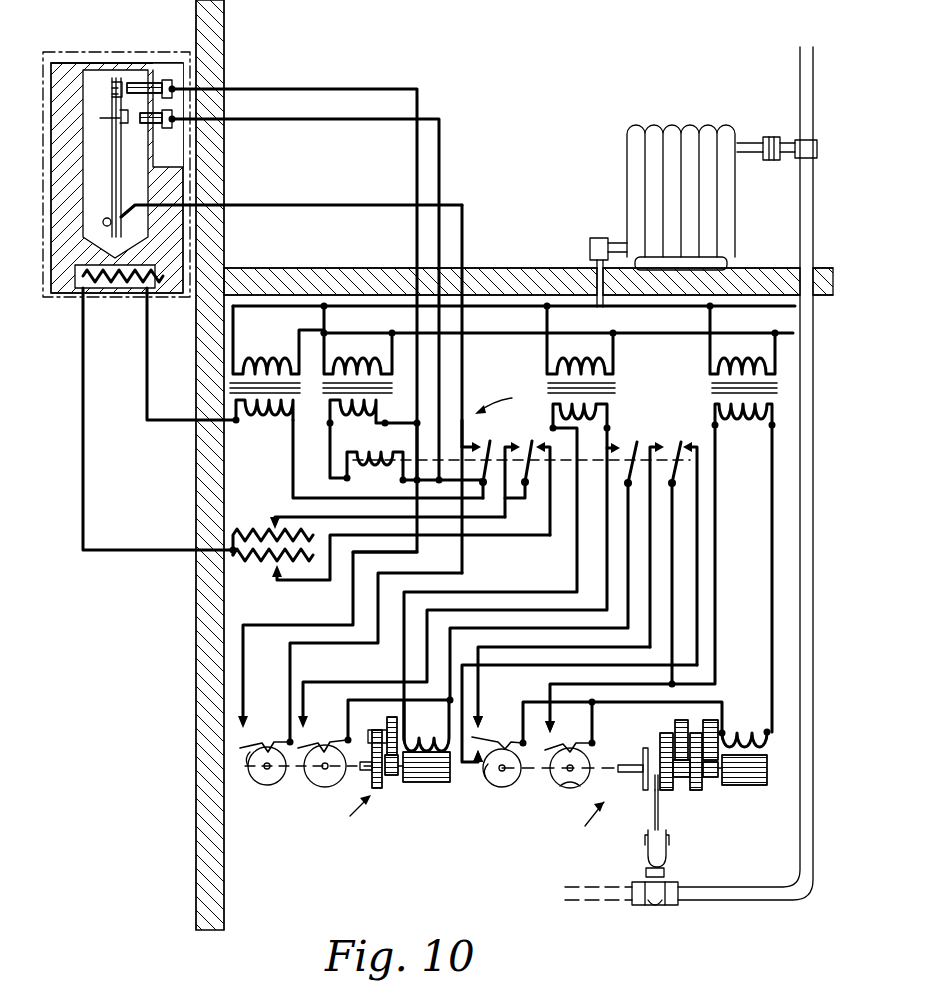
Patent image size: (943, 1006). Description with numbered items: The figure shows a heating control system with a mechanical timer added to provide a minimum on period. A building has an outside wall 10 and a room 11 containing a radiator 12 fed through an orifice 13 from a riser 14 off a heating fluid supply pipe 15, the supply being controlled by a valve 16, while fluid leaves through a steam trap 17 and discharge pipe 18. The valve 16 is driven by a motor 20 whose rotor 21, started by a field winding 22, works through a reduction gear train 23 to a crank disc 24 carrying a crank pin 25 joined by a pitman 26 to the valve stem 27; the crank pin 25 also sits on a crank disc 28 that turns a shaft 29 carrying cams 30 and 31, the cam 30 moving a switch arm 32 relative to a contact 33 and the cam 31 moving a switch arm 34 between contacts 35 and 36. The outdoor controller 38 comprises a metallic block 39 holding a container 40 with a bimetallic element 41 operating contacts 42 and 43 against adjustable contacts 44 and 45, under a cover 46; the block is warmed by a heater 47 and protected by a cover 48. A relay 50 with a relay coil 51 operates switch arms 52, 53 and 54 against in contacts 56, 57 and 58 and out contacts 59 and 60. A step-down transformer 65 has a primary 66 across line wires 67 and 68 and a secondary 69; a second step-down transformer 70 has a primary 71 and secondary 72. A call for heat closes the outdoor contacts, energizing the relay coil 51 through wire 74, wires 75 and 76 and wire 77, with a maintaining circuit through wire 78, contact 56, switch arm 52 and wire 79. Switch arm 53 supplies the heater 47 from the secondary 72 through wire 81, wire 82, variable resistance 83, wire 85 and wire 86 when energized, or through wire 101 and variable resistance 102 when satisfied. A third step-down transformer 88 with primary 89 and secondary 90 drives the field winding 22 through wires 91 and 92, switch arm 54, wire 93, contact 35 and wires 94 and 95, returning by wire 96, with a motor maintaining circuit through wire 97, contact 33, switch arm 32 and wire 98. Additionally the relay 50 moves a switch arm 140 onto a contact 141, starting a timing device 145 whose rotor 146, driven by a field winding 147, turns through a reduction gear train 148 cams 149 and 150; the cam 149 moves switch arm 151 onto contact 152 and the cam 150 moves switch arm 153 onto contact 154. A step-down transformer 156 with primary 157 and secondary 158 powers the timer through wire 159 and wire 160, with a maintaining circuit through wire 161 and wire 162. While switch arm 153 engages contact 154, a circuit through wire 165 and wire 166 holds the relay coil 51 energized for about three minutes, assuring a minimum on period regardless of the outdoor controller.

The outside wall 10 is at (196, 612).
The room 11 is at (563, 110).
The radiator 12 is at (627, 158).
The orifice 13 is at (770, 137).
The riser 14 is at (800, 200).
The heating fluid supply pipe 15 is at (612, 887).
The valve 16 is at (655, 905).
The steam trap 17 is at (598, 238).
The discharge pipe 18 is at (597, 262).
The motor 20 is at (582, 815).
The rotor 21 is at (748, 785).
The field winding 22 is at (740, 733).
The reduction gear train 23 is at (700, 790).
The crank disc 24 is at (666, 790).
The crank pin 25 is at (655, 795).
The pitman 26 is at (655, 822).
The valve stem 27 is at (666, 862).
The crank disc 28 is at (645, 752).
The shaft 29 is at (630, 774).
The cam 30 is at (556, 780).
The cam 31 is at (502, 787).
The switch arm 32 is at (564, 748).
The contact 33 is at (556, 730).
The switch arm 34 is at (492, 740).
The contact 35 is at (482, 726).
The contact 36 is at (478, 766).
The outdoor controller 38 is at (66, 300).
The metallic block 39 is at (160, 290).
The container 40 is at (96, 218).
The bimetallic element 41 is at (112, 160).
The contact 42 is at (112, 84).
The contact 43 is at (107, 115).
The contact 44 is at (149, 93).
The contact 45 is at (146, 130).
The cover 46 is at (112, 65).
The heater 47 is at (110, 288).
The cover 48 is at (60, 52).
The relay 50 is at (499, 402).
The relay coil 51 is at (380, 470).
The switch arm 52 is at (488, 470).
The switch arm 53 is at (525, 486).
The switch arm 54 is at (675, 442).
The contact 56 is at (478, 444).
The contact 57 is at (514, 442).
The contact 58 is at (656, 444).
The contact 59 is at (550, 444).
The contact 60 is at (688, 444).
The step-down transformer 65 is at (396, 390).
The primary 66 is at (360, 366).
The line wire 67 is at (506, 306).
The line wire 68 is at (506, 333).
The secondary 69 is at (363, 418).
The step-down transformer 70 is at (224, 386).
The primary 71 is at (260, 356).
The secondary 72 is at (268, 420).
The wire 74 is at (417, 242).
The wire 75 is at (439, 156).
The wire 76 is at (425, 451).
The wire 77 is at (330, 462).
The wire 78 is at (462, 230).
The wire 79 is at (450, 436).
The wire 81 is at (293, 480).
The wire 82 is at (352, 517).
The variable resistance 83 is at (262, 528).
The wire 85 is at (83, 525).
The wire 86 is at (147, 420).
The step-down transformer 88 is at (709, 386).
The primary 89 is at (732, 364).
The secondary 90 is at (743, 420).
The wire 91 is at (716, 562).
The wire 92 is at (672, 606).
The wire 93 is at (608, 647).
The wire 94 is at (540, 665).
The wire 95 is at (654, 702).
The wire 96 is at (772, 622).
The wire 97 is at (616, 684).
The wire 98 is at (592, 708).
The wire 101 is at (550, 535).
The variable resistance 102 is at (258, 566).
The switch arm 140 is at (636, 442).
The contact 141 is at (616, 440).
The timing device 145 is at (365, 777).
The rotor 146 is at (430, 782).
The field winding 147 is at (424, 740).
The reduction gear train 148 is at (378, 790).
The cam 149 is at (326, 782).
The cam 150 is at (278, 784).
The switch arm 151 is at (306, 742).
The contact 152 is at (310, 722).
The switch arm 153 is at (248, 742).
The contact 154 is at (250, 722).
The step-down transformer 156 is at (545, 386).
The primary 157 is at (566, 362).
The secondary 158 is at (592, 426).
The wire 159 is at (606, 628).
The wire 160 is at (520, 592).
The wire 161 is at (541, 610).
The wire 162 is at (350, 702).
The wire 165 is at (408, 553).
The wire 166 is at (380, 640).